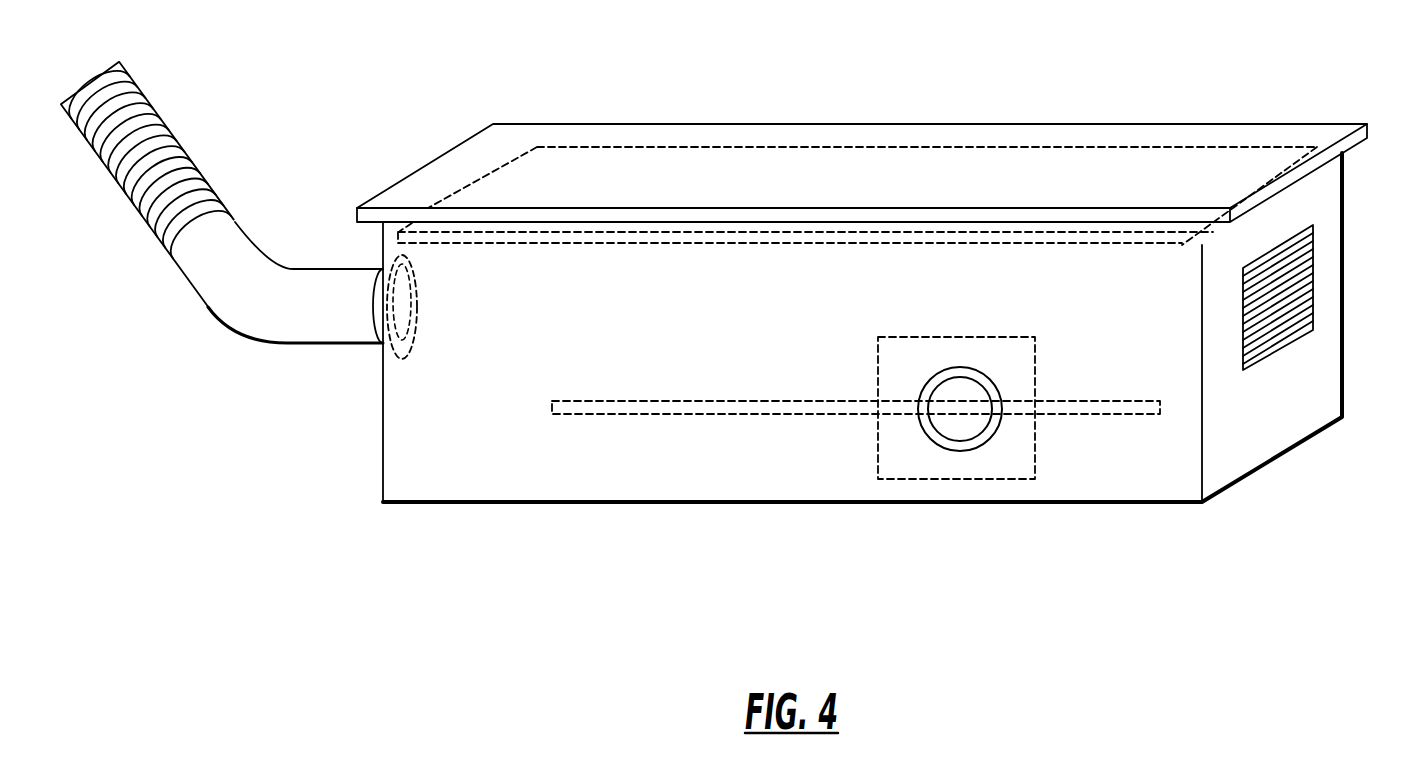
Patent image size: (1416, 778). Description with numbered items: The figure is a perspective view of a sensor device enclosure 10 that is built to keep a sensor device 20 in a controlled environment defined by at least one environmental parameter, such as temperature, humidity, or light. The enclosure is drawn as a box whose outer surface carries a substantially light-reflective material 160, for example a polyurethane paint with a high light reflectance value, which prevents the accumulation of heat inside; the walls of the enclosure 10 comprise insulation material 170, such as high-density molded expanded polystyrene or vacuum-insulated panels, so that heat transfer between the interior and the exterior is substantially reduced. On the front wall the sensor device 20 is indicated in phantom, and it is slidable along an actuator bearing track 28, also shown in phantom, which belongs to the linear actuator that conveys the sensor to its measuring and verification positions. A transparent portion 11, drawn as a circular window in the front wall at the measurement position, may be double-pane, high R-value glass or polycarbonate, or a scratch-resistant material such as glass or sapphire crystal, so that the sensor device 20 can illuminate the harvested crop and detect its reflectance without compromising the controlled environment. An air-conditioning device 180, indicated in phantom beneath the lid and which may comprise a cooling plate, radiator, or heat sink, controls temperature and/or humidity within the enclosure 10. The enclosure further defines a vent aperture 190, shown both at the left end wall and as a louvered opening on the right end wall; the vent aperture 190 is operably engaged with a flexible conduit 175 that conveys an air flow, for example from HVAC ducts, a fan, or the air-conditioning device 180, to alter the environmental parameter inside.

The sensor device enclosure 10 is at (365, 595).
The transparent portion 11 is at (957, 409).
The sensor device 20 is at (1010, 466).
The actuator bearing track 28 is at (608, 407).
The light-reflective material 160 is at (435, 175).
The insulation material 170 is at (410, 425).
The conduit 175 is at (225, 285).
The air-conditioning device 180 is at (803, 157).
The vent aperture 190 is at (390, 327).